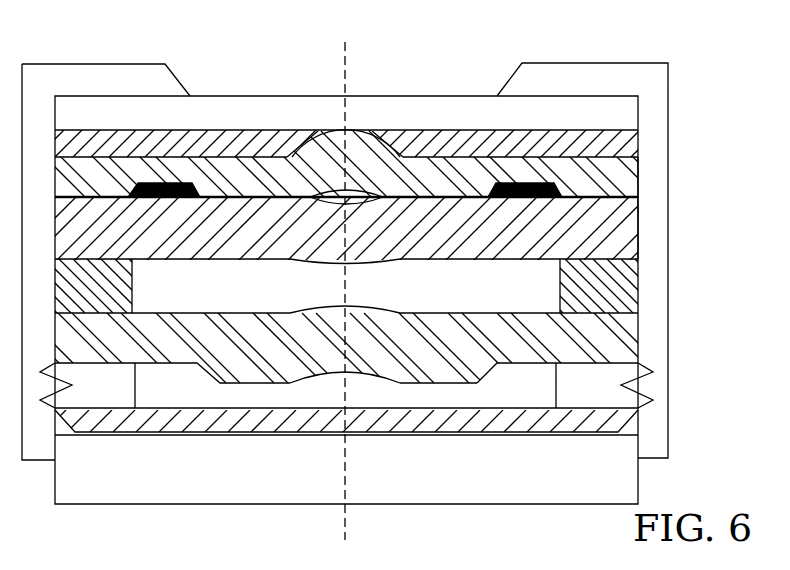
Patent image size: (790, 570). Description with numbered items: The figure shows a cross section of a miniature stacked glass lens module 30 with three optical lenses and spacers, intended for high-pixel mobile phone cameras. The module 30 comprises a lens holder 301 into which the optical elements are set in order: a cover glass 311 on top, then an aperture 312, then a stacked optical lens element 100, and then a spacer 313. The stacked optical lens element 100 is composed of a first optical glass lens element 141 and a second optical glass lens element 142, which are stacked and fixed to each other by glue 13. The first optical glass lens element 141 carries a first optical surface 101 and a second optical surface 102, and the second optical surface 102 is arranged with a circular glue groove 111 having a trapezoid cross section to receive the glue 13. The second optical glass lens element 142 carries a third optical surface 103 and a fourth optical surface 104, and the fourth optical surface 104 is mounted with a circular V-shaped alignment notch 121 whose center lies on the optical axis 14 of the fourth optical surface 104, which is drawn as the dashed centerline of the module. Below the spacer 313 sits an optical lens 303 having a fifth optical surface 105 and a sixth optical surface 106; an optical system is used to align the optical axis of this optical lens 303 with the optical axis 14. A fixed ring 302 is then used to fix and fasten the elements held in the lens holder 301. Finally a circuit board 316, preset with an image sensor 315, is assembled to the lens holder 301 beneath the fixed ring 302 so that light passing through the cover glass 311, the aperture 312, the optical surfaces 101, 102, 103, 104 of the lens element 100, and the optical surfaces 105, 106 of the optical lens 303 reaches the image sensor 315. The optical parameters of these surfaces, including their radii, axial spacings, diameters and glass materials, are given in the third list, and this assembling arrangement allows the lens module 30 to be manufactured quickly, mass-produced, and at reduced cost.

The glue 13 is at (143, 183).
The glue groove 111 is at (173, 183).
The optical axis 14 is at (345, 277).
The fourth optical surface 104 is at (319, 260).
The third optical surface 103 is at (337, 193).
The second optical surface 102 is at (358, 188).
The first optical surface 101 is at (397, 147).
The miniature stacked glass lens module 30 is at (588, 56).
The lens holder 301 is at (636, 80).
The cover glass 311 is at (630, 115).
The aperture 312 is at (630, 145).
The first optical glass lens element 141 is at (612, 180).
The stacked optical lens element 100 is at (708, 163).
The second optical glass lens element 142 is at (614, 225).
The alignment notch 121 is at (630, 260).
The spacer 313 is at (630, 292).
The optical lens 303 is at (630, 331).
The fixed ring 302 is at (633, 370).
The image sensor 315 is at (632, 422).
The circuit board 316 is at (630, 478).
The sixth optical surface 106 is at (392, 380).
The fifth optical surface 105 is at (391, 313).